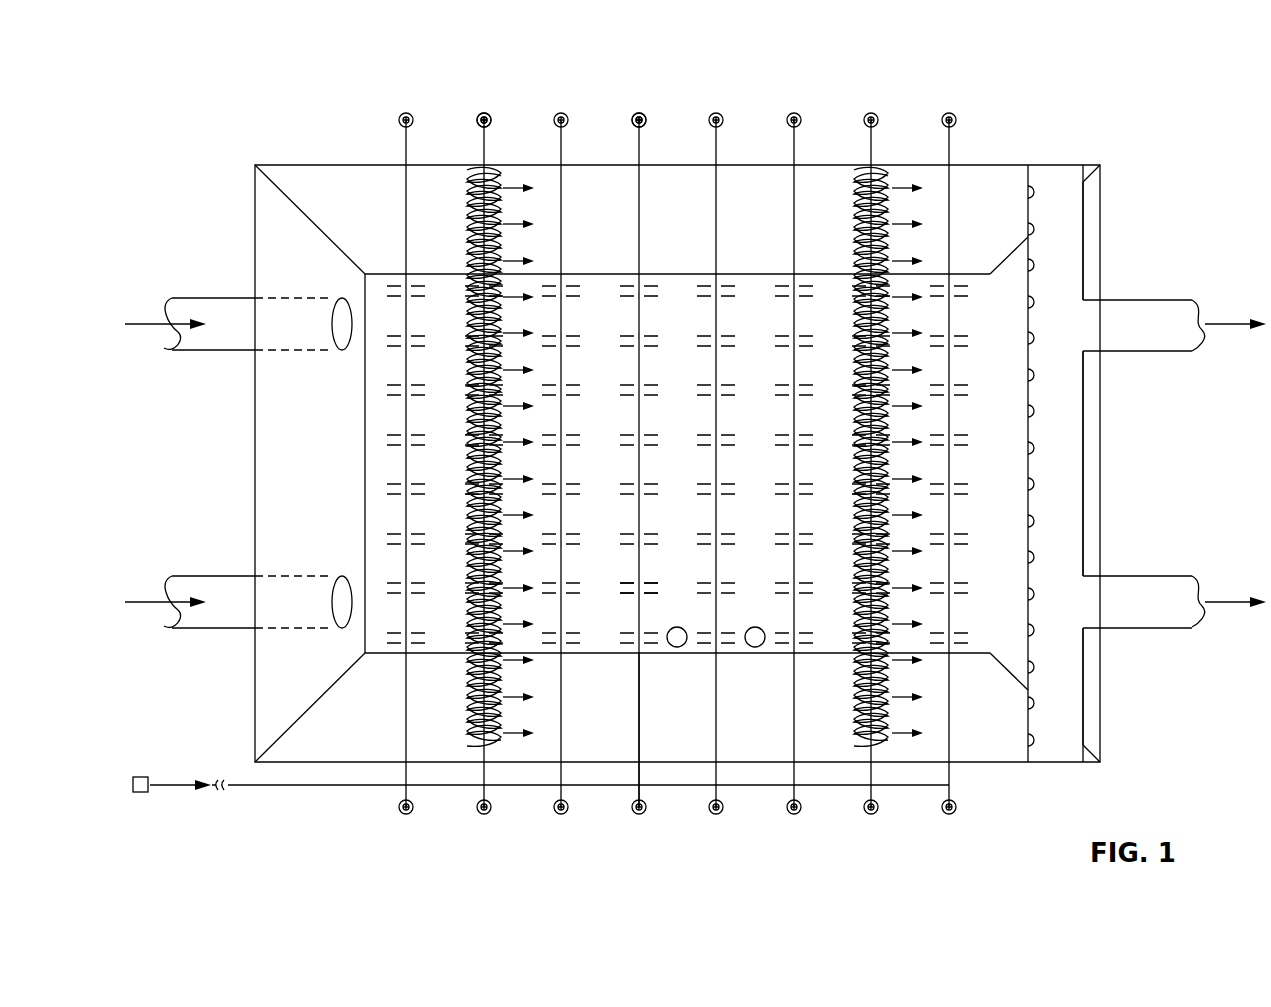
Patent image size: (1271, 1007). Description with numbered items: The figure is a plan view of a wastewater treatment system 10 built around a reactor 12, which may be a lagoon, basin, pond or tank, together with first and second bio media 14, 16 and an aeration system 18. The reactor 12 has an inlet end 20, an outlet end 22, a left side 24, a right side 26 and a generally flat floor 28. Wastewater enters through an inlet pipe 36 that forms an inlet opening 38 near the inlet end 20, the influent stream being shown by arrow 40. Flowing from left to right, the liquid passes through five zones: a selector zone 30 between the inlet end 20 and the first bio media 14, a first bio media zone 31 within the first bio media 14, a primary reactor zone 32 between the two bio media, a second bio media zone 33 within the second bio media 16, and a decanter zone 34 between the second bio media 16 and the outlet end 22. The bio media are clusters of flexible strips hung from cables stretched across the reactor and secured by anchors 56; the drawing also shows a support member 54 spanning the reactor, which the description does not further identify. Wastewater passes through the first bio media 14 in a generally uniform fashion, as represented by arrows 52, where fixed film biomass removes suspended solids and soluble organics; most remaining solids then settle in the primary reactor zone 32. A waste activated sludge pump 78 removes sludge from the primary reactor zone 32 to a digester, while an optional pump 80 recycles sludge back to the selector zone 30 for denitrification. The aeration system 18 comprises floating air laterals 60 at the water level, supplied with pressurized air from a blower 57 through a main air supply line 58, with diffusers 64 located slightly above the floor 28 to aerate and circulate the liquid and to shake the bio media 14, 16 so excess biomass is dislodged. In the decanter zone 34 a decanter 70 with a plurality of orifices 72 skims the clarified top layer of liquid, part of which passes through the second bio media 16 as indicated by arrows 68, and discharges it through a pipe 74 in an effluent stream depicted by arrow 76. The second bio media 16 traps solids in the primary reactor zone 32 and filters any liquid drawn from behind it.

The wastewater treatment system 10 is at (208, 71).
The reactor 12 is at (987, 168).
The first bio media 14 is at (458, 240).
The second bio media 16 is at (846, 234).
The aeration system 18 is at (647, 325).
The inlet end 20 is at (350, 410).
The outlet end 22 is at (1056, 425).
The left side 24 is at (611, 265).
The right side 26 is at (590, 665).
The floor 28 is at (613, 475).
The selector zone 30 is at (465, 96).
The first bio media zone 31 is at (502, 96).
The primary reactor zone 32 is at (850, 96).
The second bio media zone 33 is at (894, 96).
The decanter zone 34 is at (1100, 96).
The inlet pipe 36 is at (217, 301).
The inlet opening 38 is at (344, 323).
The influent stream arrow 40 is at (158, 320).
The flow arrows 52 is at (508, 186).
The electrode support rod 54 is at (640, 146).
The anchors 56 is at (477, 118).
The blower 57 is at (146, 777).
The main air supply line 58 is at (298, 786).
The floating air lateral 60 is at (639, 737).
The diffusers 64 is at (650, 581).
The flow arrows through second bio media 68 is at (896, 181).
The decanter 70 is at (1062, 233).
The orifices 72 is at (1036, 303).
The discharge pipe 74 is at (1148, 305).
The effluent stream arrow 76 is at (1228, 325).
The waste activated sludge pump 78 is at (755, 627).
The recycle pump 80 is at (677, 627).